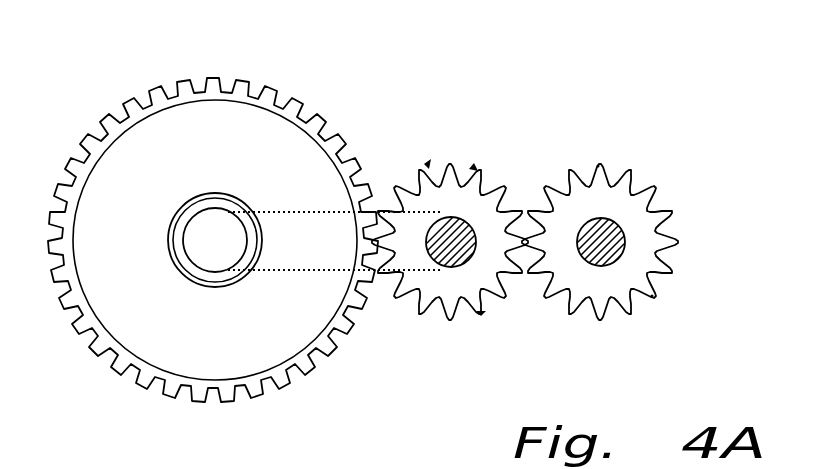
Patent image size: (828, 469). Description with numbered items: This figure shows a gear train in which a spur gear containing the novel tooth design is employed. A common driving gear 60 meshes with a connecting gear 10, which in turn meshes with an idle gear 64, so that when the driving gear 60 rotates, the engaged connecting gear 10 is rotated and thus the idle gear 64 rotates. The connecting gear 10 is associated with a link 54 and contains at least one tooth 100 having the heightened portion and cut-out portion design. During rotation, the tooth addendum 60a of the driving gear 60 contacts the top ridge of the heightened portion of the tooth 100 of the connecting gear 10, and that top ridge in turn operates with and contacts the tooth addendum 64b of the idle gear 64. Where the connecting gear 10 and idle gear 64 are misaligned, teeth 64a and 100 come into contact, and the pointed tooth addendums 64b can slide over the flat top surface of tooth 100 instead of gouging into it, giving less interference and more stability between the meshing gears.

The driving gear 60 is at (213, 206).
The tooth addendum 60a is at (320, 118).
The link 54 is at (305, 253).
The connecting gear 10 is at (450, 232).
The tooth 100 is at (471, 167).
The idle gear 64 is at (631, 213).
The tooth 64a is at (652, 296).
The tooth addendum 64b is at (598, 165).